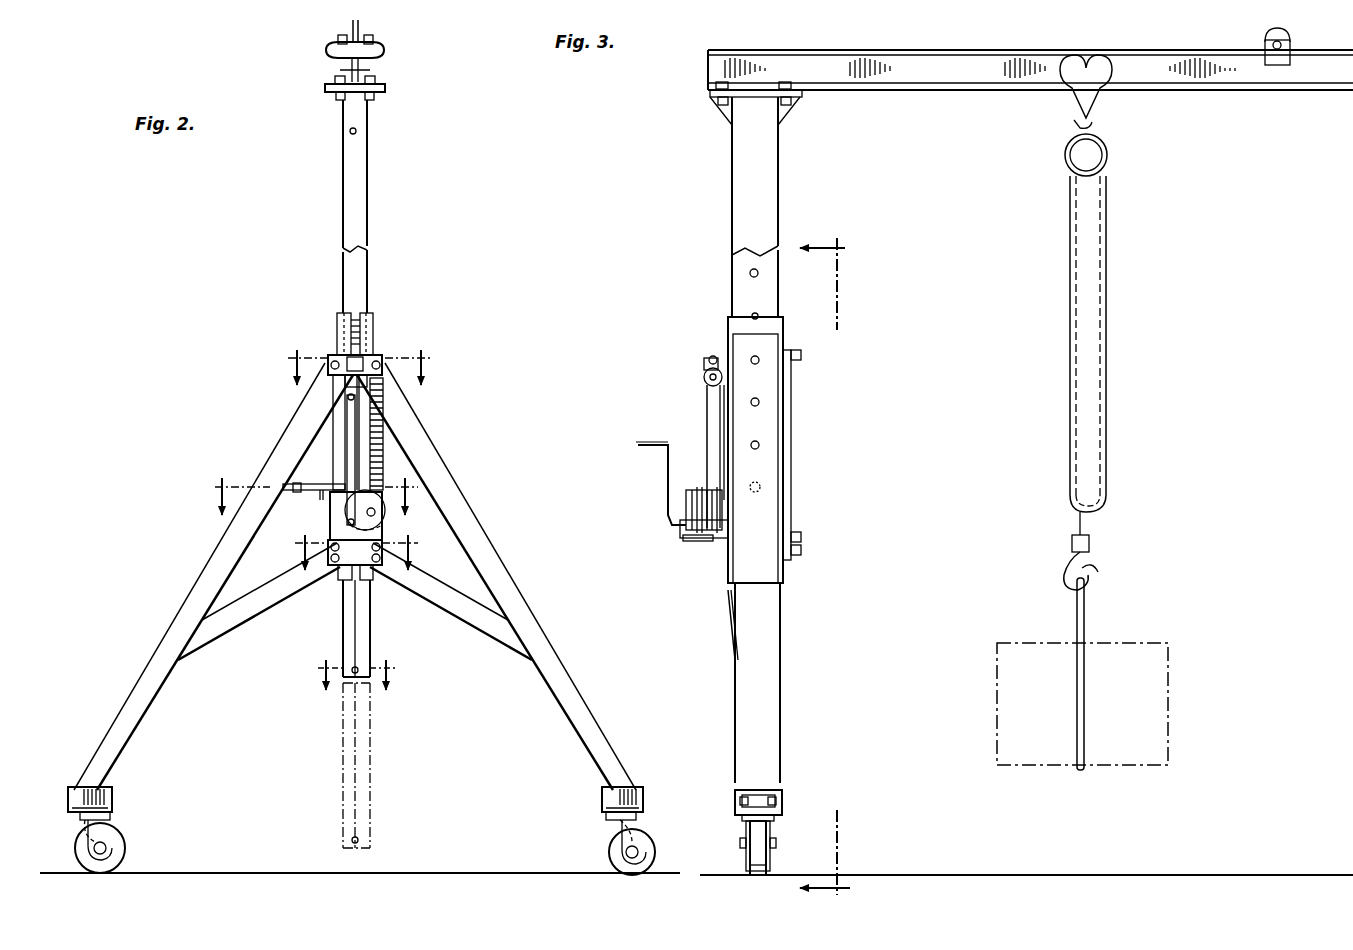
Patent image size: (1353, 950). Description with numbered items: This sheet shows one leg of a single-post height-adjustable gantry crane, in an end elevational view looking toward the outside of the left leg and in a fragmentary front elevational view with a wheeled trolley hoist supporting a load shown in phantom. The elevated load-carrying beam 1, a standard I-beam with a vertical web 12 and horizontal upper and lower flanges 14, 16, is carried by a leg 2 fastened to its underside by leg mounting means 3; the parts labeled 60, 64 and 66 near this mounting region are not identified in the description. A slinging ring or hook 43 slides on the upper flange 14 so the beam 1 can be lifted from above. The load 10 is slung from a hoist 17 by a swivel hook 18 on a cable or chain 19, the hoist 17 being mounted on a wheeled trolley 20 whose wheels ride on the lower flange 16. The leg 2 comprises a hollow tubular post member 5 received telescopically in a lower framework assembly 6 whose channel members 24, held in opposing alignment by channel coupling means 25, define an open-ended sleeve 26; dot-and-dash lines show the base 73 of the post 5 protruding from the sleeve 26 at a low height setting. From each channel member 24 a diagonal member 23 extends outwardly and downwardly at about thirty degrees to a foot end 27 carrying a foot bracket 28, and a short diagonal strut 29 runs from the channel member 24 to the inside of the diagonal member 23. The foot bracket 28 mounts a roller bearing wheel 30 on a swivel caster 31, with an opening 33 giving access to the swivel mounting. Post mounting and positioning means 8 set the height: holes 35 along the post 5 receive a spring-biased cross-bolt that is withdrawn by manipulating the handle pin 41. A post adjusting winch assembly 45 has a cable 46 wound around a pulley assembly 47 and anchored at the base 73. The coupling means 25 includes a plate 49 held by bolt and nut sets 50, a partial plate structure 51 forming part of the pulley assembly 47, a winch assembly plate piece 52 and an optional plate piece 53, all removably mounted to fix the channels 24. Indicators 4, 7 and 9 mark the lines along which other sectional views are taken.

In FIG. 2, the load-carrying beam 1 is at (372, 66).
In FIG. 3, the load-carrying beam 1 is at (945, 50).
In FIG. 2, the leg 2 is at (370, 172).
In FIG. 3, the leg 2 is at (732, 195).
In FIG. 2, the leg mounting means 3 is at (378, 96).
In FIG. 3, the leg mounting means 3 is at (783, 118).
In FIG. 3, the section line 4- 4 is at (831, 569).
In FIG. 2, the post member 5 is at (365, 258).
In FIG. 3, the post member 5 is at (740, 240).
In FIG. 2, the lower framework assembly 6 is at (512, 520).
In FIG. 3, the lower framework assembly 6 is at (785, 610).
In FIG. 2, the section line 7— 7 is at (356, 549).
In FIG. 2, the post mounting and positioning means 8 is at (285, 483).
In FIG. 3, the post mounting and positioning means 8 is at (762, 485).
In FIG. 2, the section line 9- 9 is at (356, 667).
In FIG. 3, the load 10 is at (1120, 645).
In FIG. 2, the web 12 is at (340, 72).
In FIG. 3, the web 12 is at (715, 68).
In FIG. 2, the upper flange 14 is at (342, 50).
In FIG. 3, the upper flange 14 is at (762, 50).
In FIG. 2, the lower flange 16 is at (385, 88).
In FIG. 3, the lower flange 16 is at (862, 92).
In FIG. 3, the hoist 17 is at (1065, 155).
In FIG. 3, the swivel hook 18 is at (1068, 558).
In FIG. 3, the cable or chain 19 is at (1108, 275).
In FIG. 3, the wheeled trolley 20 is at (1084, 60).
In FIG. 2, the diagonal member 23 is at (212, 553).
In FIG. 2, the channel member 24 is at (340, 318).
In FIG. 3, the channel member 24 is at (740, 325).
In FIG. 2, the channel coupling means 25 is at (385, 430).
In FIG. 3, the channel coupling means 25 is at (792, 350).
In FIG. 2, the sleeve 26 is at (372, 312).
In FIG. 3, the sleeve 26 is at (788, 318).
In FIG. 2, the foot end 27 is at (80, 788).
In FIG. 3, the foot end 27 is at (782, 785).
In FIG. 2, the foot bracket 28 is at (112, 792).
In FIG. 3, the foot bracket 28 is at (740, 790).
In FIG. 2, the diagonal strut 29 is at (215, 630).
In FIG. 2, the roller bearing wheel 30 is at (125, 848).
In FIG. 3, the roller bearing wheel 30 is at (750, 862).
In FIG. 2, the swivel caster 31 is at (100, 825).
In FIG. 3, the swivel caster 31 is at (746, 828).
In FIG. 3, the opening 33 is at (776, 798).
In FIG. 3, the holes 35 is at (752, 316).
In FIG. 2, the handle pin 41 is at (320, 498).
In FIG. 2, the slinging ring or hook 43 is at (360, 36).
In FIG. 3, the slinging ring or hook 43 is at (1286, 40).
In FIG. 2, the post adjusting winch assembly 45 is at (385, 510).
In FIG. 3, the post adjusting winch assembly 45 is at (680, 540).
In FIG. 2, the cable 46 is at (347, 410).
In FIG. 3, the cable 46 is at (706, 403).
In FIG. 2, the pulley assembly 47 is at (345, 381).
In FIG. 3, the pulley assembly 47 is at (703, 374).
In FIG. 2, the plate 49 is at (383, 450).
In FIG. 3, the plate 49 is at (795, 385).
In FIG. 3, the threaded bolt and nut sets 50 is at (801, 355).
In FIG. 2, the partial plate structure 51 is at (335, 355).
In FIG. 3, the partial plate structure 51 is at (728, 360).
In FIG. 3, the winch assembly plate piece 52 is at (712, 545).
In FIG. 3, the optional plate piece 53 is at (800, 535).
In FIG. 2, the mounting plate 60 is at (335, 92).
In FIG. 3, the mounting plate 60 is at (712, 96).
In FIG. 2, the hole 64 is at (350, 133).
In FIG. 2, the bolts 66 is at (352, 104).
In FIG. 3, the bolts 66 is at (725, 108).
In FIG. 2, the base of post member 73 is at (358, 667).